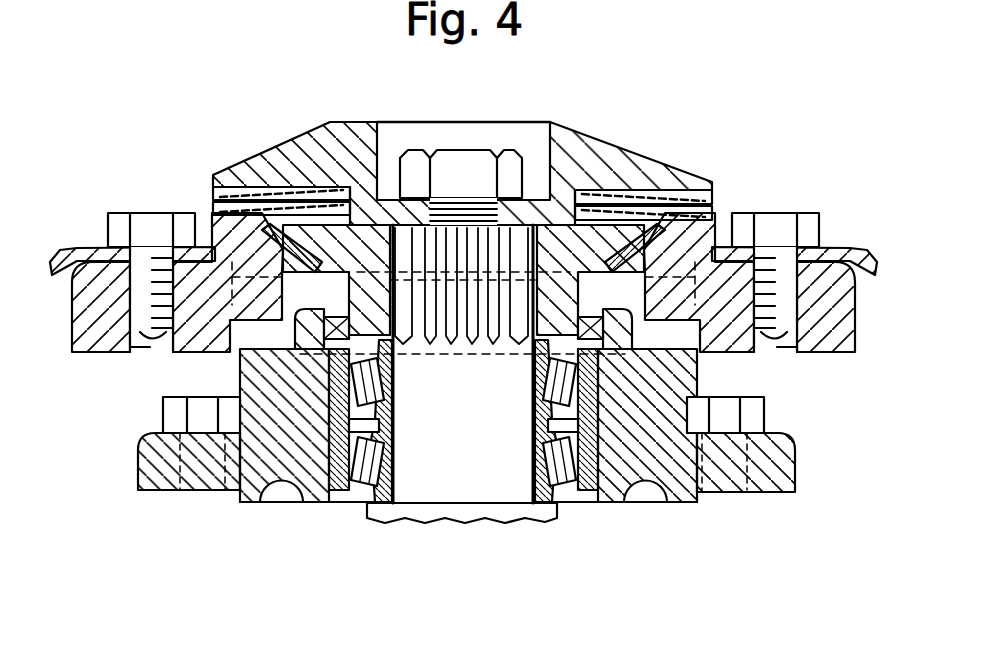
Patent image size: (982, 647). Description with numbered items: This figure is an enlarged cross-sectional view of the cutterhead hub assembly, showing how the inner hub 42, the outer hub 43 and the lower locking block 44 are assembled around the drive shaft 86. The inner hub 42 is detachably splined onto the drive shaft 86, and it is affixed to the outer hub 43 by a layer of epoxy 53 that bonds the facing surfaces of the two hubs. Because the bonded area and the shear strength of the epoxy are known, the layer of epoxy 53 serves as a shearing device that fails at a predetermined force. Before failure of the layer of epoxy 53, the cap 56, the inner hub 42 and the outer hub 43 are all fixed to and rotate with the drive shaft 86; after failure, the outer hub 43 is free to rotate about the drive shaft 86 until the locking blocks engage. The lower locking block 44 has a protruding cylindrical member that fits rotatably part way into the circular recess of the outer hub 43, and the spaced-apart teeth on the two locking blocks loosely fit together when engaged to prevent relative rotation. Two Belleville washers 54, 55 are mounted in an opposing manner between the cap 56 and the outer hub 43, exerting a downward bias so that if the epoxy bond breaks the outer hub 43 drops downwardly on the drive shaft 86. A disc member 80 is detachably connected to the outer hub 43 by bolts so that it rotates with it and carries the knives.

The inner hub 42 is at (306, 252).
The outer hub 43 is at (232, 252).
The lower locking block 44 is at (632, 470).
The layer of epoxy 53 is at (708, 236).
The Belleville washer 54 is at (634, 198).
The Belleville washer 55 is at (681, 212).
The cap 56 is at (575, 140).
The disc member 80 is at (854, 256).
The drive shaft 86 is at (462, 406).